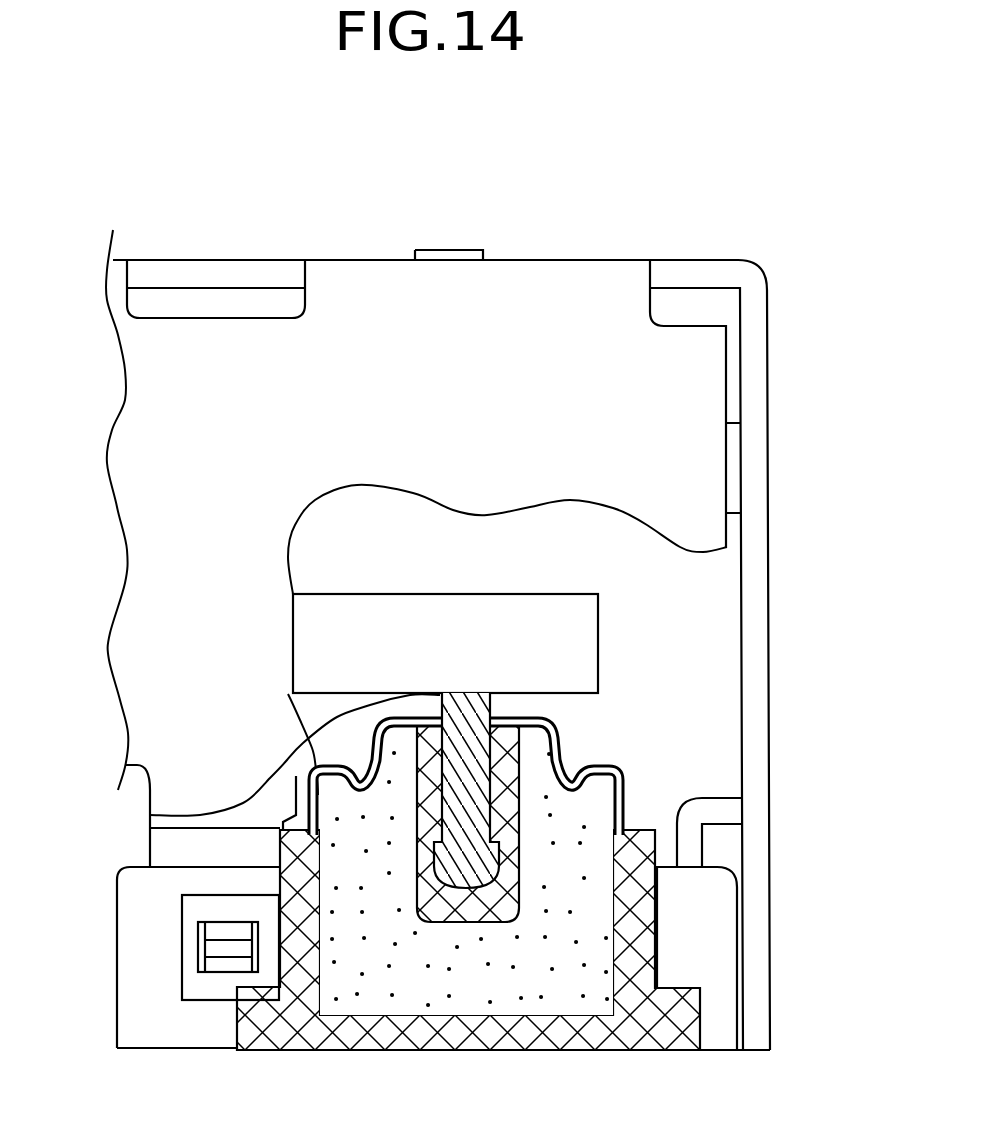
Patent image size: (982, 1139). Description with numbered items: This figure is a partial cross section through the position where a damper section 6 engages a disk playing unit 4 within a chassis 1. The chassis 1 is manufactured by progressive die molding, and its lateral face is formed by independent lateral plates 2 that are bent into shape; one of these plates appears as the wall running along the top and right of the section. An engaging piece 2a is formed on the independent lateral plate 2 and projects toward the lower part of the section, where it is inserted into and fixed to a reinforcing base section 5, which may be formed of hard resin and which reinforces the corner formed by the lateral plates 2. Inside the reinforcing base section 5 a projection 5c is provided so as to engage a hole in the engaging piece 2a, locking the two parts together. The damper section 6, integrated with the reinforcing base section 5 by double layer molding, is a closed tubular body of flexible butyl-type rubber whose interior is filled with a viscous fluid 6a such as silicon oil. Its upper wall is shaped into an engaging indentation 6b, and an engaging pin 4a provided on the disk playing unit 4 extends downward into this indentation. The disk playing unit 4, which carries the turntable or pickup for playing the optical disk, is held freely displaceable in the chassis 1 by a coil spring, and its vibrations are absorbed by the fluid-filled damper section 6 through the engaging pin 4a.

The chassis 1 is at (352, 252).
The independent lateral plate 2 is at (567, 343).
The engaging piece 2a is at (183, 845).
The disk playing unit 4 is at (365, 643).
The engaging pin 4a is at (205, 813).
The reinforcing base section 5 is at (168, 1025).
The projection 5c is at (200, 940).
The damper section 6 is at (622, 786).
The viscous fluid 6a is at (565, 963).
The engaging indentation 6b is at (492, 716).